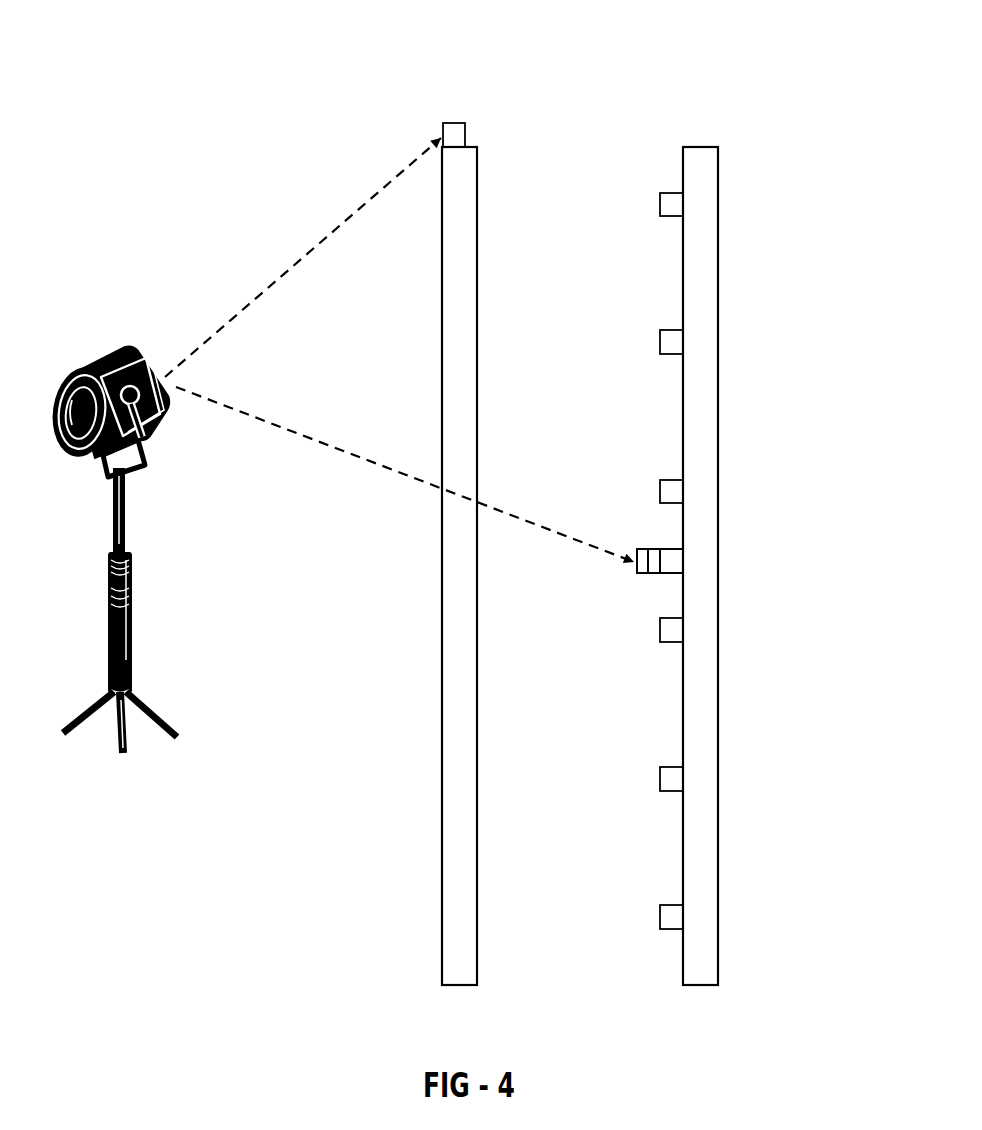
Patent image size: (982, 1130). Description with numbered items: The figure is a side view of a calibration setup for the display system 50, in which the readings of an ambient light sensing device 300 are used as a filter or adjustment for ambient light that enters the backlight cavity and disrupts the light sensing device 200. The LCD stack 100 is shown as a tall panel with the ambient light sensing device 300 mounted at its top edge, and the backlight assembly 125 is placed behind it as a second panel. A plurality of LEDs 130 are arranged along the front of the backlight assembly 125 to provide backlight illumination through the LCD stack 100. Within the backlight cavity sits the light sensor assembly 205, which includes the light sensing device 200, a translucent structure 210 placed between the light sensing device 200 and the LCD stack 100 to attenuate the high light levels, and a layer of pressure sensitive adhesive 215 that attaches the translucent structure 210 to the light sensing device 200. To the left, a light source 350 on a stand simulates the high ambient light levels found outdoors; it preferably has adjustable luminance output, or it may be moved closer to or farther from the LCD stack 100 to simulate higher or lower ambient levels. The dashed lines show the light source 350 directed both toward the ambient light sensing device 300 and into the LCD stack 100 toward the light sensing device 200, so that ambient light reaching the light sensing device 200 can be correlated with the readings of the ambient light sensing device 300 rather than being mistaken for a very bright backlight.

The system 50 is at (547, 76).
The LCD stack 100 is at (453, 320).
The backlight assembly 125 is at (707, 252).
The LEDs 130 is at (661, 329).
The light sensing device 200 is at (670, 558).
The light sensor assembly 205 is at (665, 542).
The translucent structure 210 is at (643, 545).
The layer of pressure sensitive adhesive 215 is at (657, 575).
The ambient light sensing device 300 is at (455, 122).
The light source 350 is at (142, 548).